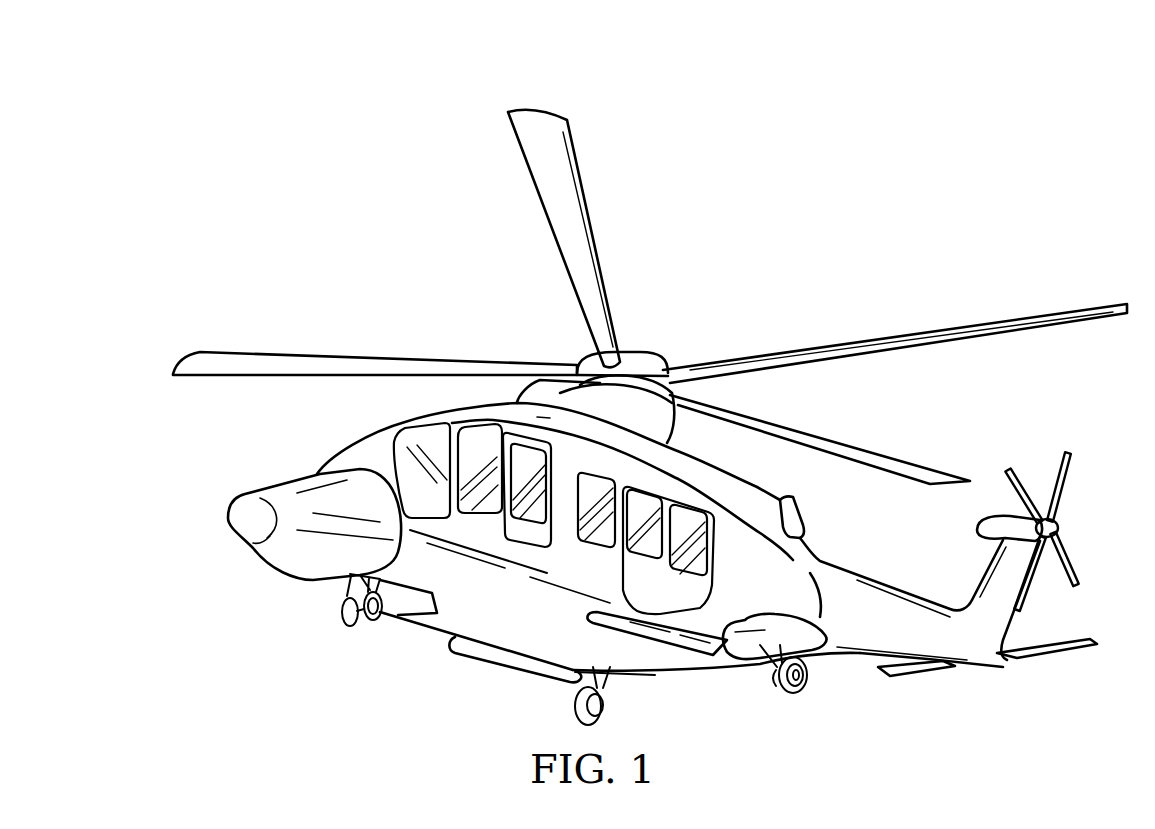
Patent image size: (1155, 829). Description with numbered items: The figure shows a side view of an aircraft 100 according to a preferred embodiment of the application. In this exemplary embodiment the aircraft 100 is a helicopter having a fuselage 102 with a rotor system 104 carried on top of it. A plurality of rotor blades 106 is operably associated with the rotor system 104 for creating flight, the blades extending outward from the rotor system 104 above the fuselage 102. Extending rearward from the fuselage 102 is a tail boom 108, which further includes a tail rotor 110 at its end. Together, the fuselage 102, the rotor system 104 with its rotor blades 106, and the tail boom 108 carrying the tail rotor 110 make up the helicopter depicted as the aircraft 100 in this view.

The aircraft 100 is at (320, 99).
The fuselage 102 is at (499, 622).
The rotor system 104 is at (657, 331).
The rotor blades 106 is at (883, 350).
The tail boom 108 is at (855, 648).
The tail rotor 110 is at (1060, 500).